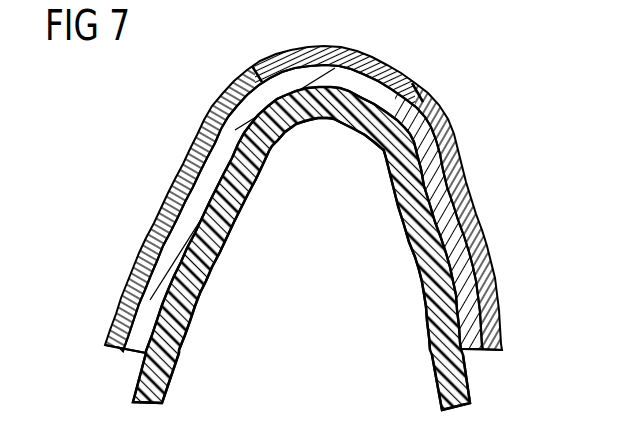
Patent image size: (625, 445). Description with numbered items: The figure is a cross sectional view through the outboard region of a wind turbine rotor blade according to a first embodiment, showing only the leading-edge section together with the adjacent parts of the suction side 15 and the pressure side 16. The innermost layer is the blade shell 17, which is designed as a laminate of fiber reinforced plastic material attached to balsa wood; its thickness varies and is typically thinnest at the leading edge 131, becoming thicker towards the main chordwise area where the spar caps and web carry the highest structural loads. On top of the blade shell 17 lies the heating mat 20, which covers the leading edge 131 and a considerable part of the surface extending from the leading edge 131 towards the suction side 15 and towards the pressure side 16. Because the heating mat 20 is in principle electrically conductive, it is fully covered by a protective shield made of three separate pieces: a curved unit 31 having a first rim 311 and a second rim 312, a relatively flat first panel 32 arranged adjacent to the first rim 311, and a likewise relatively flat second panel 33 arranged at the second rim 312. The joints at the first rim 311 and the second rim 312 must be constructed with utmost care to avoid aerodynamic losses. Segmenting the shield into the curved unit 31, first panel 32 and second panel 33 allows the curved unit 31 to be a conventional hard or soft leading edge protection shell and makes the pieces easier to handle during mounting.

The suction side 15 is at (513, 242).
The pressure side 16 is at (112, 242).
The blade shell 17 is at (160, 380).
The heating mat 20 is at (187, 203).
The curved unit 31 is at (354, 47).
The first rim 311 is at (418, 92).
The second rim 312 is at (253, 78).
The first panel 32 is at (470, 230).
The second panel 33 is at (194, 140).
The leading edge 131 is at (325, 120).